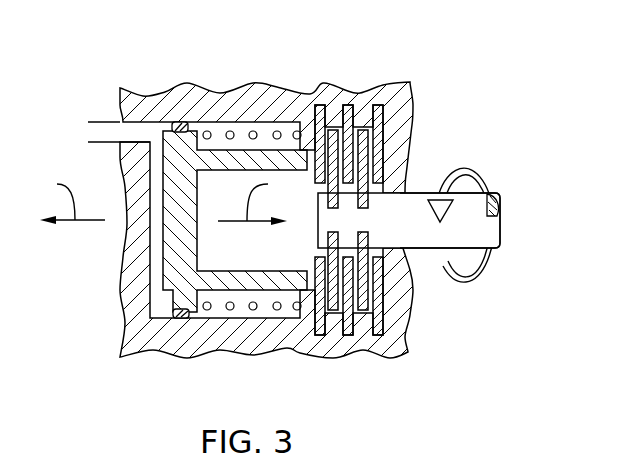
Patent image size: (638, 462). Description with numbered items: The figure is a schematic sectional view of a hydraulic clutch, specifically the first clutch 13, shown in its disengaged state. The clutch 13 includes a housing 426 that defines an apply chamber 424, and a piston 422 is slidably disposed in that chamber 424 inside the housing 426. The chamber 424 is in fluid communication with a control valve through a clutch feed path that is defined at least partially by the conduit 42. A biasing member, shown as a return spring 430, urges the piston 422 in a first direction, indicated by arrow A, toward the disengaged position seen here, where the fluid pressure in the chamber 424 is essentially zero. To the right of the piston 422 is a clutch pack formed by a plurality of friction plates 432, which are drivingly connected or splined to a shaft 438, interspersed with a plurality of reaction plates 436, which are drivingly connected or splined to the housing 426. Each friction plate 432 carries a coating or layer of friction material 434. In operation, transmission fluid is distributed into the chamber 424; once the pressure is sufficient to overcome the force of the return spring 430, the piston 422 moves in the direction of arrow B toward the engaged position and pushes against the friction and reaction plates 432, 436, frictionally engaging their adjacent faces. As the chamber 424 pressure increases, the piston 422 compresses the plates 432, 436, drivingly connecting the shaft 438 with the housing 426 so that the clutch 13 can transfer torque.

The first clutch 13 is at (330, 370).
The conduit 42 is at (103, 122).
The piston 422 is at (178, 141).
The chamber 424 is at (153, 240).
The housing 426 is at (397, 105).
The return spring 430 is at (252, 133).
The friction plates 432 is at (332, 270).
The friction material 434 is at (383, 297).
The reaction plates 436 is at (380, 106).
The shaft 438 is at (502, 210).